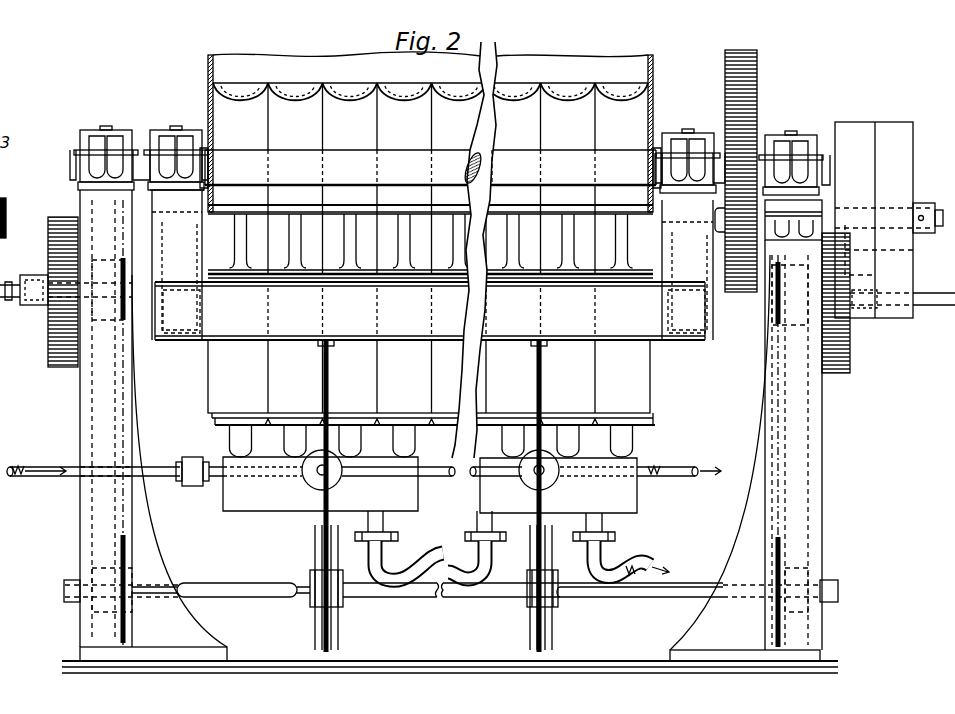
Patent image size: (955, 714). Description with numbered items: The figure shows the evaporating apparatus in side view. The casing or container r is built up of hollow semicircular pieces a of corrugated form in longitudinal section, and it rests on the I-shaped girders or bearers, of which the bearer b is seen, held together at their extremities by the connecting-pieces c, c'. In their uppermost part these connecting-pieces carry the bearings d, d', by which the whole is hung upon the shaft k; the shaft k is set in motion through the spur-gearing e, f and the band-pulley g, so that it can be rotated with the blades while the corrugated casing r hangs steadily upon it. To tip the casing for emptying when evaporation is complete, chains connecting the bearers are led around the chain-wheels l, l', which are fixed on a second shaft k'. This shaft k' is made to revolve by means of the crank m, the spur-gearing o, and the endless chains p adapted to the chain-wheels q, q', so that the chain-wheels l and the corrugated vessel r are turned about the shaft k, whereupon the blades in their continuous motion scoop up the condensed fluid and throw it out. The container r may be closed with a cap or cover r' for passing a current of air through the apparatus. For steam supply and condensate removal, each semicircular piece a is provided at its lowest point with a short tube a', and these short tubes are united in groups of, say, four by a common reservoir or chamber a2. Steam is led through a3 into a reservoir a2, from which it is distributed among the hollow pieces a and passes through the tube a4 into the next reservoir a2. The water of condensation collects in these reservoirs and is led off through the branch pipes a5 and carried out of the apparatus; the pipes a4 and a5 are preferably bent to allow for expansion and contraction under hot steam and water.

The hollow semicircular pieces a is at (431, 238).
The short tube a' is at (431, 441).
The common reservoir or chamber a2 is at (430, 485).
The steam inlet a3 is at (70, 470).
The tube a4 is at (450, 470).
The branch pipes a5 is at (456, 530).
The I-shaped girder or bearer b is at (430, 311).
The connecting-piece c is at (177, 265).
The connecting-piece c' is at (687, 270).
The bearing d is at (139, 151).
The bearing d' is at (742, 176).
The spur-gearing e is at (758, 114).
The spur-gearing f is at (720, 238).
The band-pulley g is at (889, 220).
The shaft k is at (430, 168).
The second shaft k' is at (427, 595).
The chain-wheel l is at (319, 587).
The chain-wheel l' is at (544, 587).
The crank m is at (902, 309).
The spur-gearing o is at (48, 252).
The endless chains p is at (123, 490).
The chain-wheel q is at (450, 294).
The chain-wheel q' is at (450, 591).
The casing or container r is at (394, 367).
The cap or cover r' is at (622, 366).